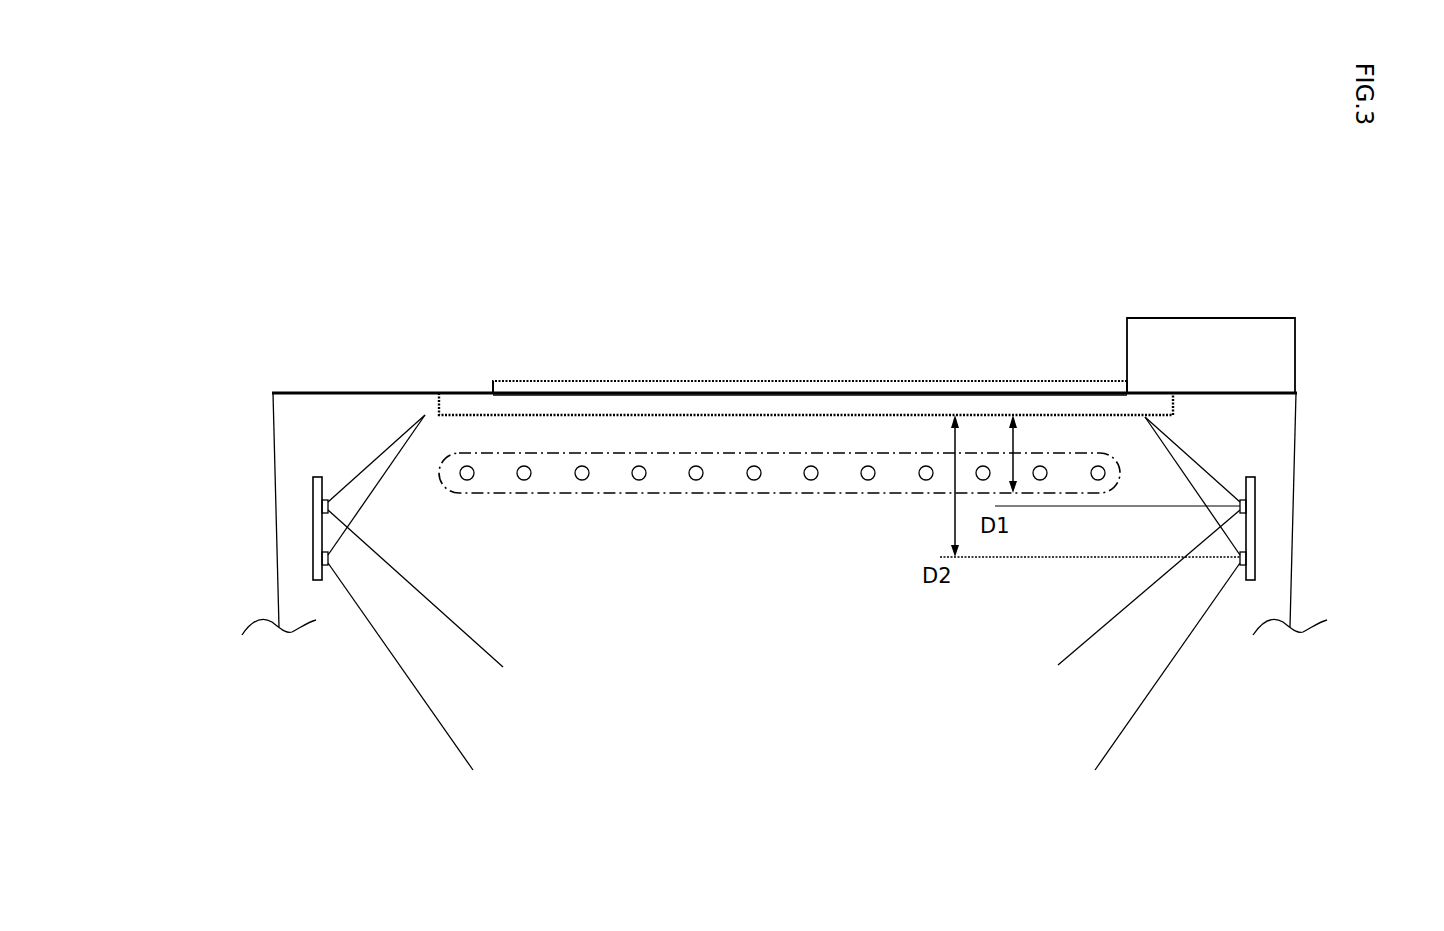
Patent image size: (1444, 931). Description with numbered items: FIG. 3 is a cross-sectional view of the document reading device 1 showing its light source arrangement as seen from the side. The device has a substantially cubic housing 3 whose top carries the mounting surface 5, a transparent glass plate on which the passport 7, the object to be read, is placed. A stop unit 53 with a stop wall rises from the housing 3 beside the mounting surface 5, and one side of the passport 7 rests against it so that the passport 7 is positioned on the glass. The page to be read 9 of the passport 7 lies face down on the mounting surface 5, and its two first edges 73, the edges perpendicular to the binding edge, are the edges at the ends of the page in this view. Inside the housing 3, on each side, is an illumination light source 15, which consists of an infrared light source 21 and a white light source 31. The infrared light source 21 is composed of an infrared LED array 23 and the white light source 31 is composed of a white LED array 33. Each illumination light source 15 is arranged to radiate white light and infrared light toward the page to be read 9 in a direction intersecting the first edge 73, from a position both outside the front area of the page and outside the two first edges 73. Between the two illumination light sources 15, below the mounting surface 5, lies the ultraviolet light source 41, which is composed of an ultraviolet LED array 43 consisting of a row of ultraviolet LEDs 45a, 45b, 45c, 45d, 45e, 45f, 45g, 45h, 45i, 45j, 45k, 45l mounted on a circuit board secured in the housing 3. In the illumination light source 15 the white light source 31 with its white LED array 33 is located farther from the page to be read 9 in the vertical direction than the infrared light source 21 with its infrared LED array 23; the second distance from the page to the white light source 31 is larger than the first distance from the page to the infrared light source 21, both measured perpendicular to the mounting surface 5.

The document reading device 1 is at (1290, 268).
The housing 3 is at (355, 393).
The mounting surface 5 is at (468, 402).
The passport 7 is at (527, 380).
The page to be read 9 is at (638, 400).
The illumination light source 15 is at (181, 502).
The infrared light source 21 is at (293, 505).
The infrared LED array 23 is at (784, 506).
The white light source 31 is at (293, 557).
The white LED array 33 is at (784, 558).
The ultraviolet light source 41 is at (782, 447).
The ultraviolet LED array 43 is at (779, 473).
The ultraviolet LED 45a is at (465, 485).
The ultraviolet LED 45b is at (522, 485).
The ultraviolet LED 45c is at (580, 485).
The ultraviolet LED 45d is at (637, 485).
The ultraviolet LED 45e is at (694, 485).
The ultraviolet LED 45f is at (752, 485).
The ultraviolet LED 45g is at (809, 485).
The ultraviolet LED 45h is at (866, 485).
The ultraviolet LED 45i is at (923, 448).
The ultraviolet LED 45j is at (981, 448).
The ultraviolet LED 45k is at (1038, 448).
The ultraviolet LED 45l is at (1096, 448).
The stop unit 53 is at (1127, 352).
The first edge 73 is at (492, 382).